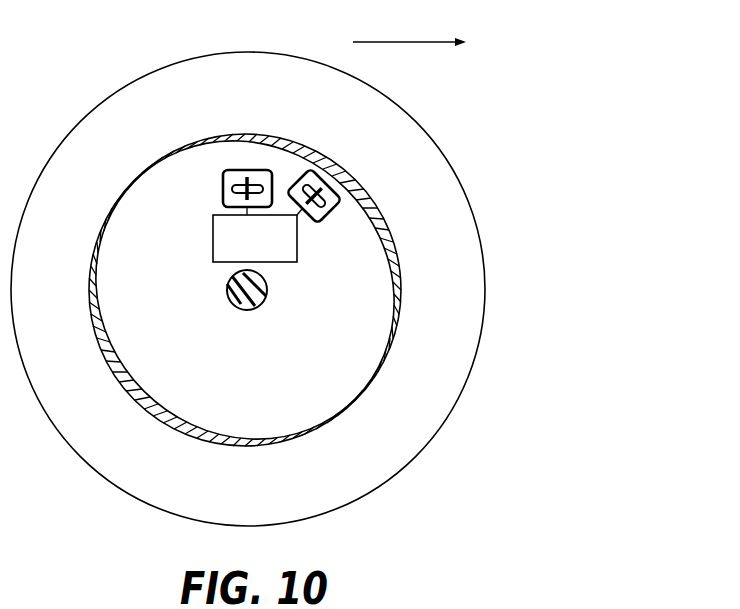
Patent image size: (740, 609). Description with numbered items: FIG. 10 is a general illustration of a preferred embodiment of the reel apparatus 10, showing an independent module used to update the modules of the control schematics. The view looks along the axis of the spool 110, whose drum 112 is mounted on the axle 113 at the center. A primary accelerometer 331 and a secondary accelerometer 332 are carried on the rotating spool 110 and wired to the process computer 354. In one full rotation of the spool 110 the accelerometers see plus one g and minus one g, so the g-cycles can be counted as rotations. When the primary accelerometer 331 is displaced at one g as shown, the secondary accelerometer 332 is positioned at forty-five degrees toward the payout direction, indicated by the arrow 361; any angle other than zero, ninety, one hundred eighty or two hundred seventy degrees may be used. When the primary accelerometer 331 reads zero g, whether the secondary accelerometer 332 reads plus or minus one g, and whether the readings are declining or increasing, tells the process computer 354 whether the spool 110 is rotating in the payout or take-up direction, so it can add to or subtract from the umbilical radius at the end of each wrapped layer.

The reel apparatus 10 is at (571, 47).
The spool 110 is at (283, 490).
The drum 112 is at (388, 332).
The axle 113 is at (227, 289).
The primary accelerometer 331 is at (245, 170).
The secondary accelerometer 332 is at (330, 181).
The process computer 354 is at (213, 240).
The direction arrow 361 is at (398, 42).